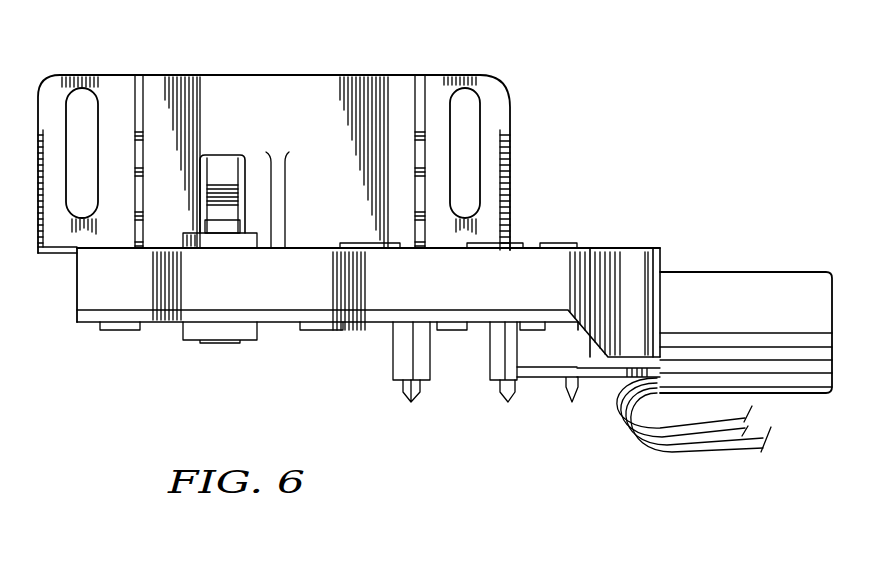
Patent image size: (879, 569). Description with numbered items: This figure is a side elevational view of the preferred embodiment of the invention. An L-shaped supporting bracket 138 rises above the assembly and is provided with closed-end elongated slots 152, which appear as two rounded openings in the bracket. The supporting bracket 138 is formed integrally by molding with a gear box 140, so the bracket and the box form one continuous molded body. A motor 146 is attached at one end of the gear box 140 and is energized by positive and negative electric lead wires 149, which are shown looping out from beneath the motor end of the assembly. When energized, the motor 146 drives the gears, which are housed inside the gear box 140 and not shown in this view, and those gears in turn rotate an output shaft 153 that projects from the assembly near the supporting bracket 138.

The L-shaped supporting bracket 138 is at (38, 222).
The gear box 140 is at (622, 255).
The motor 146 is at (745, 272).
The electric lead wires 149 is at (725, 440).
The closed-end elongated slots 152 is at (87, 103).
The output shaft 153 is at (220, 152).